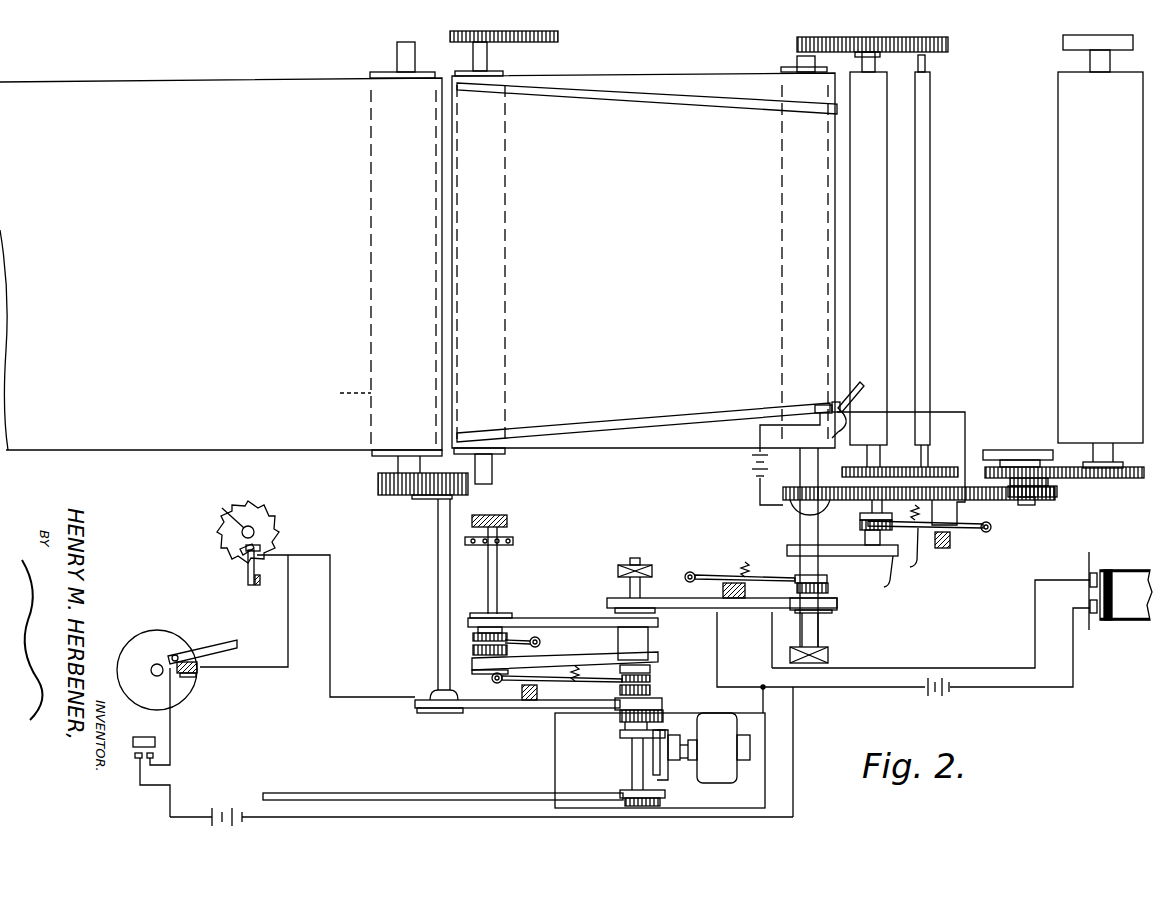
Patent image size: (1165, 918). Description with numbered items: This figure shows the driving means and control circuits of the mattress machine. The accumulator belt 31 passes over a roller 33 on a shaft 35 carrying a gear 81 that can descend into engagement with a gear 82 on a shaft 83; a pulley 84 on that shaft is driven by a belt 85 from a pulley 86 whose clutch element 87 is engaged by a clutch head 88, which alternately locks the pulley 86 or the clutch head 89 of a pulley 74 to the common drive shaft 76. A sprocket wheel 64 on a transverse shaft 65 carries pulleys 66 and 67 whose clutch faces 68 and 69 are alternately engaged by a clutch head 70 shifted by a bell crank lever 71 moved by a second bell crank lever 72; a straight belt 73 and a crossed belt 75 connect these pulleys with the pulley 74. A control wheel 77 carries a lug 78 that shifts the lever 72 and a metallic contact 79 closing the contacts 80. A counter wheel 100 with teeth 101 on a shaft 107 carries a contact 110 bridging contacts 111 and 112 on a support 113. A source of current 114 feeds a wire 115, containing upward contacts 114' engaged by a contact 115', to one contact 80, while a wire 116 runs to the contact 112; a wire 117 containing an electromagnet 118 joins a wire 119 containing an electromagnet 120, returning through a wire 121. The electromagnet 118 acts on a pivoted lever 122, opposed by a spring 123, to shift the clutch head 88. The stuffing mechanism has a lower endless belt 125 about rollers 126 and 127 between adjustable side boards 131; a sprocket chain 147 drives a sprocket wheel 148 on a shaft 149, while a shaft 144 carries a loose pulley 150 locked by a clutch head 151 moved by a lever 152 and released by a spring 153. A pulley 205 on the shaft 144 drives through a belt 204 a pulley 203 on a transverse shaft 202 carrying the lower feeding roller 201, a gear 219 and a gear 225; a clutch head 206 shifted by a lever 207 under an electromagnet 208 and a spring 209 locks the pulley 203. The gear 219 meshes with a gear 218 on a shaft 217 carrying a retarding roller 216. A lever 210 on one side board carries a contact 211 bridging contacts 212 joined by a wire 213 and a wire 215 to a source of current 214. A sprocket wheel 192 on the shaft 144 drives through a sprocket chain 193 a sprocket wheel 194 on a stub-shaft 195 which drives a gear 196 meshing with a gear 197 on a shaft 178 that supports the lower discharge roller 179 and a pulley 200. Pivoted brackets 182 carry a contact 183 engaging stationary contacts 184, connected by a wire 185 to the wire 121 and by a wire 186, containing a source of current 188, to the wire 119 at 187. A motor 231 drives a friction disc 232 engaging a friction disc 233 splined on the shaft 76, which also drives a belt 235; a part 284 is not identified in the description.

The sheet 31 is at (221, 246).
The fold line 33 is at (343, 393).
The shaft 35 is at (380, 464).
The contact bar 64 is at (513, 540).
The shaft 65 is at (497, 567).
The base plate 66 is at (502, 613).
The plate 67 is at (476, 674).
The hub 68 is at (506, 626).
The gear 69 is at (473, 650).
The gear 70 is at (473, 637).
The lever 71 is at (533, 638).
The arm 72 is at (212, 644).
The plate 73 is at (557, 617).
The column 74 is at (648, 638).
The bar 75 is at (563, 660).
The support 76 is at (630, 587).
The disc 77 is at (140, 644).
The contact 78 is at (192, 678).
The contact 79 is at (198, 670).
The pivot 80 is at (176, 654).
The gear 81 is at (388, 494).
The hub 82 is at (440, 498).
The shaft 83 is at (438, 579).
The plate 84 is at (435, 713).
The plate 85 is at (485, 708).
The plate 86 is at (662, 703).
The gear 87 is at (652, 690).
The gear 88 is at (652, 678).
The disc 89 is at (652, 667).
The ratchet wheel 100 is at (238, 525).
The ratchet teeth 101 is at (270, 510).
The crank 107 is at (222, 508).
The pawl 110 is at (240, 552).
The armature 111 is at (262, 551).
The contact 112 is at (273, 576).
The bar 113 is at (248, 576).
The battery 114 is at (481, 802).
The contacts 114' is at (159, 783).
The wire 115 is at (179, 716).
The block 115' is at (135, 729).
The wire 116 is at (282, 666).
The wire 117 is at (342, 621).
The contact 118 is at (530, 701).
The bracket 119 is at (722, 652).
The contact 120 is at (733, 599).
The wire 121 is at (793, 716).
The lever 122 is at (590, 683).
The spring 123 is at (572, 673).
The table 125 is at (643, 278).
The line 126 is at (507, 218).
The shaft 127 is at (797, 64).
The bar 131 is at (684, 108).
The shaft 144 is at (818, 631).
The rack 147 is at (558, 37).
The shaft 148 is at (487, 46).
The bearing 149 is at (487, 64).
The plate 150 is at (837, 604).
The gear 151 is at (828, 588).
The lever 152 is at (715, 574).
The spring 153 is at (749, 570).
The shaft 178 is at (1100, 448).
The roller 179 is at (1100, 246).
The strip 182 is at (1140, 614).
The mark 183 is at (1108, 568).
The contact 184 is at (1088, 578).
The wire 185 is at (975, 664).
The wire 186 is at (1016, 688).
The junction 187 is at (760, 688).
The battery 188 is at (930, 697).
The rack 192 is at (790, 505).
The block 193 is at (996, 486).
The gear 194 is at (1050, 498).
The block 195 is at (1028, 505).
The gear 196 is at (1046, 467).
The rack 197 is at (1113, 478).
The cap 200 is at (1063, 45).
The roller 201 is at (878, 216).
The gear 202 is at (900, 461).
The wire 203 is at (893, 579).
The disc 204 is at (830, 576).
The plate 205 is at (790, 547).
The lever 206 is at (860, 522).
The wire 207 is at (915, 566).
The contact 208 is at (946, 548).
The spring 209 is at (913, 523).
The lever 210 is at (848, 396).
The hook 211 is at (846, 428).
The contact 212 is at (822, 404).
The wire 213 is at (760, 430).
The battery 214 is at (752, 466).
The wire 215 is at (760, 497).
The column 216 is at (930, 131).
The shaft 217 is at (928, 458).
The bracket 218 is at (962, 460).
The shaft 219 is at (826, 547).
The gear 225 is at (948, 44).
The motor 231 is at (718, 783).
The shaft 232 is at (632, 763).
The plate 233 is at (620, 734).
The bar 235 is at (444, 793).
The plate 284 is at (618, 792).